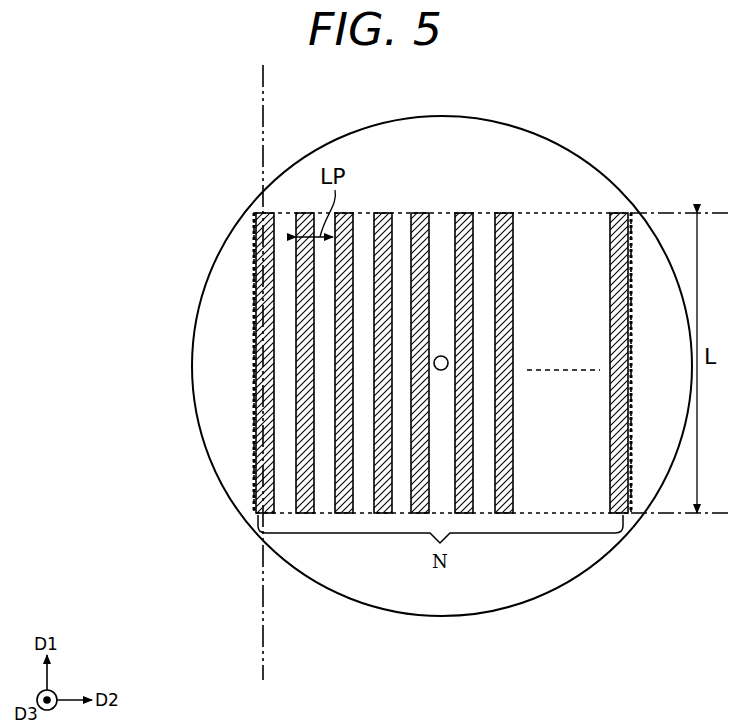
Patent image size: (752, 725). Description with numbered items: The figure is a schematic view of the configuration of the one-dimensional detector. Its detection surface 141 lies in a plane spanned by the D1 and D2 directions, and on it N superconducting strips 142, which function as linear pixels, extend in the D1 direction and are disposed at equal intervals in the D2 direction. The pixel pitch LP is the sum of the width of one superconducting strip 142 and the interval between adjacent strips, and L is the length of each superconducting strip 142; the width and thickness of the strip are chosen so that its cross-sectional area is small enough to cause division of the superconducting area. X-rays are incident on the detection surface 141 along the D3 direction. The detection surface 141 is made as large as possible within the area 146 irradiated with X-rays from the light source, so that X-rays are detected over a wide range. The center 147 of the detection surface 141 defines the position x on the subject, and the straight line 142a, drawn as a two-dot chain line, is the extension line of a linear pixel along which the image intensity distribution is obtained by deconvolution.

The detection surface 141 is at (596, 213).
The superconducting strip 142 is at (254, 283).
The straight line 142a is at (263, 121).
The area irradiated with X-rays 146 is at (192, 372).
The center of the detection surface 147 is at (441, 356).